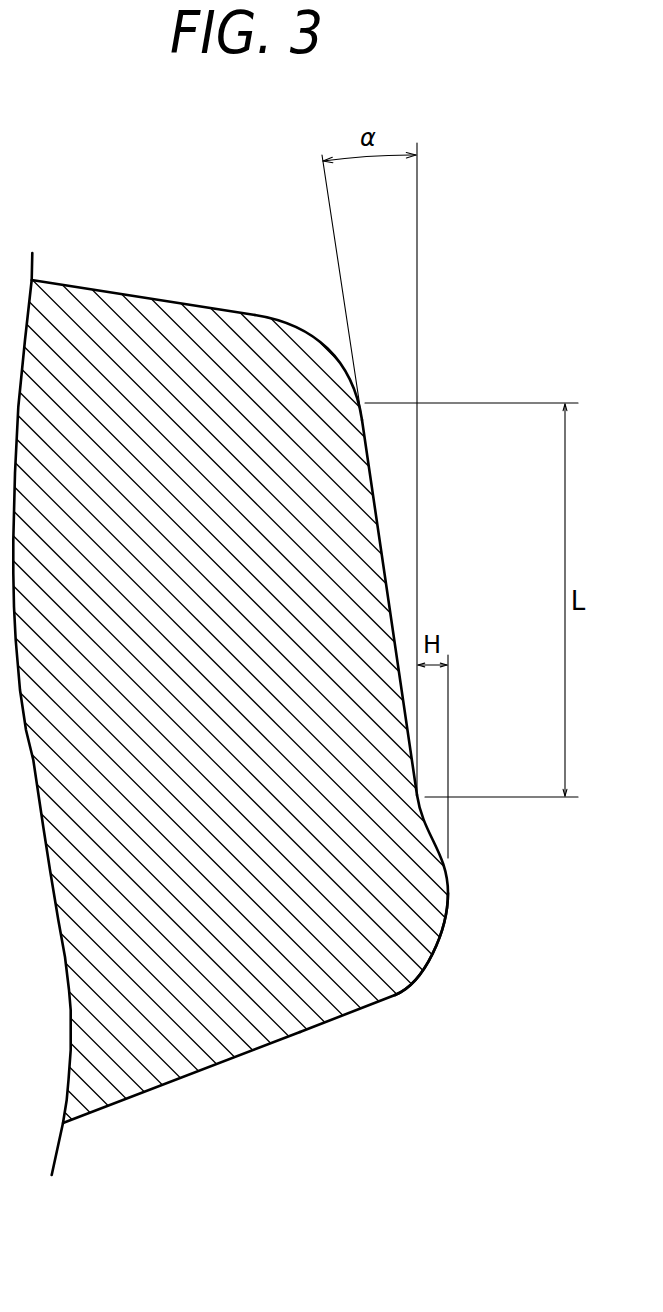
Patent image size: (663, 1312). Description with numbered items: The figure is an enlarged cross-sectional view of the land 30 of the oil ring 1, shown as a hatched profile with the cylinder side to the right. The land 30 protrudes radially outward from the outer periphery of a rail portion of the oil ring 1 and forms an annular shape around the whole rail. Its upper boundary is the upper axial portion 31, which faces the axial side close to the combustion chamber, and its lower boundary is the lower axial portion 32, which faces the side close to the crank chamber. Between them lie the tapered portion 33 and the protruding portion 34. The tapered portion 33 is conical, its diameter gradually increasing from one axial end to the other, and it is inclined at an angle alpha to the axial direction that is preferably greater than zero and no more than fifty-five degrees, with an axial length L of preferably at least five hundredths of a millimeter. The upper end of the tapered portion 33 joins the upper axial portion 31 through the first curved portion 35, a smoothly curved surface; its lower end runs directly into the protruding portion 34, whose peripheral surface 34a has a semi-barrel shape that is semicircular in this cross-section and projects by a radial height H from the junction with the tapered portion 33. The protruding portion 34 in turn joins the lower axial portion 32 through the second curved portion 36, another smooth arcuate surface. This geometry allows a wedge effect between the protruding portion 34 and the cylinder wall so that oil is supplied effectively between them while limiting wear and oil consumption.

The oil ring 1 is at (331, 698).
The land 30 is at (331, 698).
The upper axial portion 31 is at (132, 294).
The lower axial portion 32 is at (200, 1071).
The tapered portion 33 is at (380, 537).
The protruding portion 34 is at (450, 898).
The peripheral surface 34a is at (433, 955).
The first curved portion 35 is at (322, 338).
The second curved portion 36 is at (385, 1000).